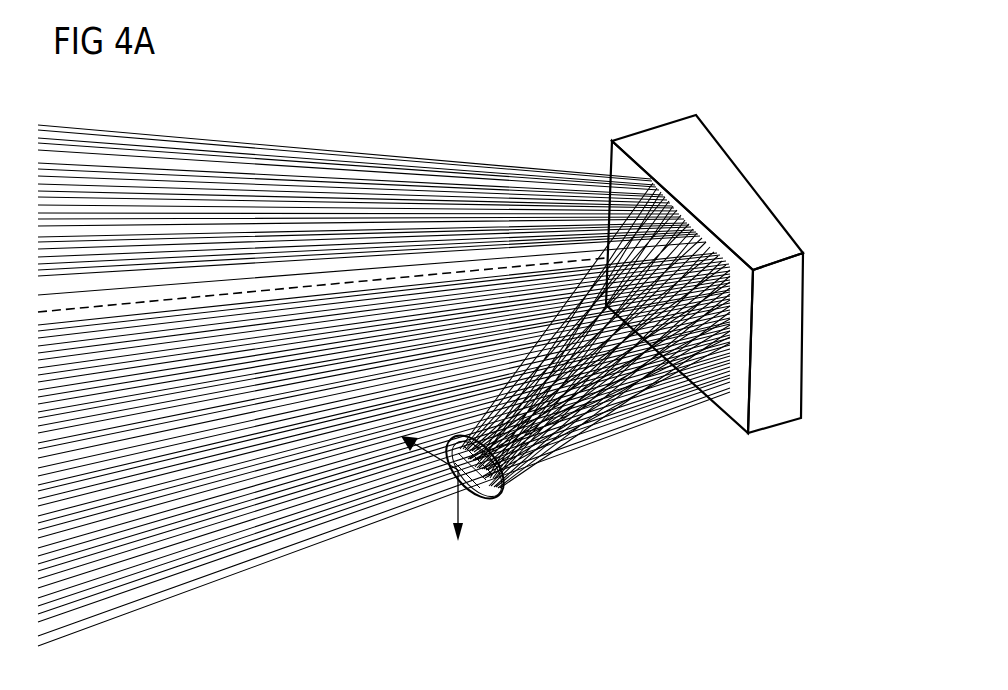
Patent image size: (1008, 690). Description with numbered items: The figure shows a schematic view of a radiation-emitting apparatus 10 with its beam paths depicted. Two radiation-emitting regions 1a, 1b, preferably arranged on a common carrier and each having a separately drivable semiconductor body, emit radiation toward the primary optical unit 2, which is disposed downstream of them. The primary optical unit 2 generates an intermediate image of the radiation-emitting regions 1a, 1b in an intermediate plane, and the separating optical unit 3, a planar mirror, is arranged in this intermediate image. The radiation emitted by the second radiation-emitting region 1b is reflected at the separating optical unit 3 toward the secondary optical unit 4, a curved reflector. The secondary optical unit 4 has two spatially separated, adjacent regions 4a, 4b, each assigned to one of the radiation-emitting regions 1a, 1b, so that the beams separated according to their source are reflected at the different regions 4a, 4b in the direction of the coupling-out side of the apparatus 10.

The radiation-emitting apparatus 10 is at (642, 70).
The first radiation-emitting region 1a is at (384, 385).
The second radiation-emitting region 1b is at (445, 482).
The primary optical unit 2 is at (490, 486).
The separating optical unit 3 is at (572, 440).
The secondary optical unit 4 is at (762, 396).
The first region of the secondary optical unit 4a is at (700, 148).
The second region of the secondary optical unit 4b is at (762, 228).